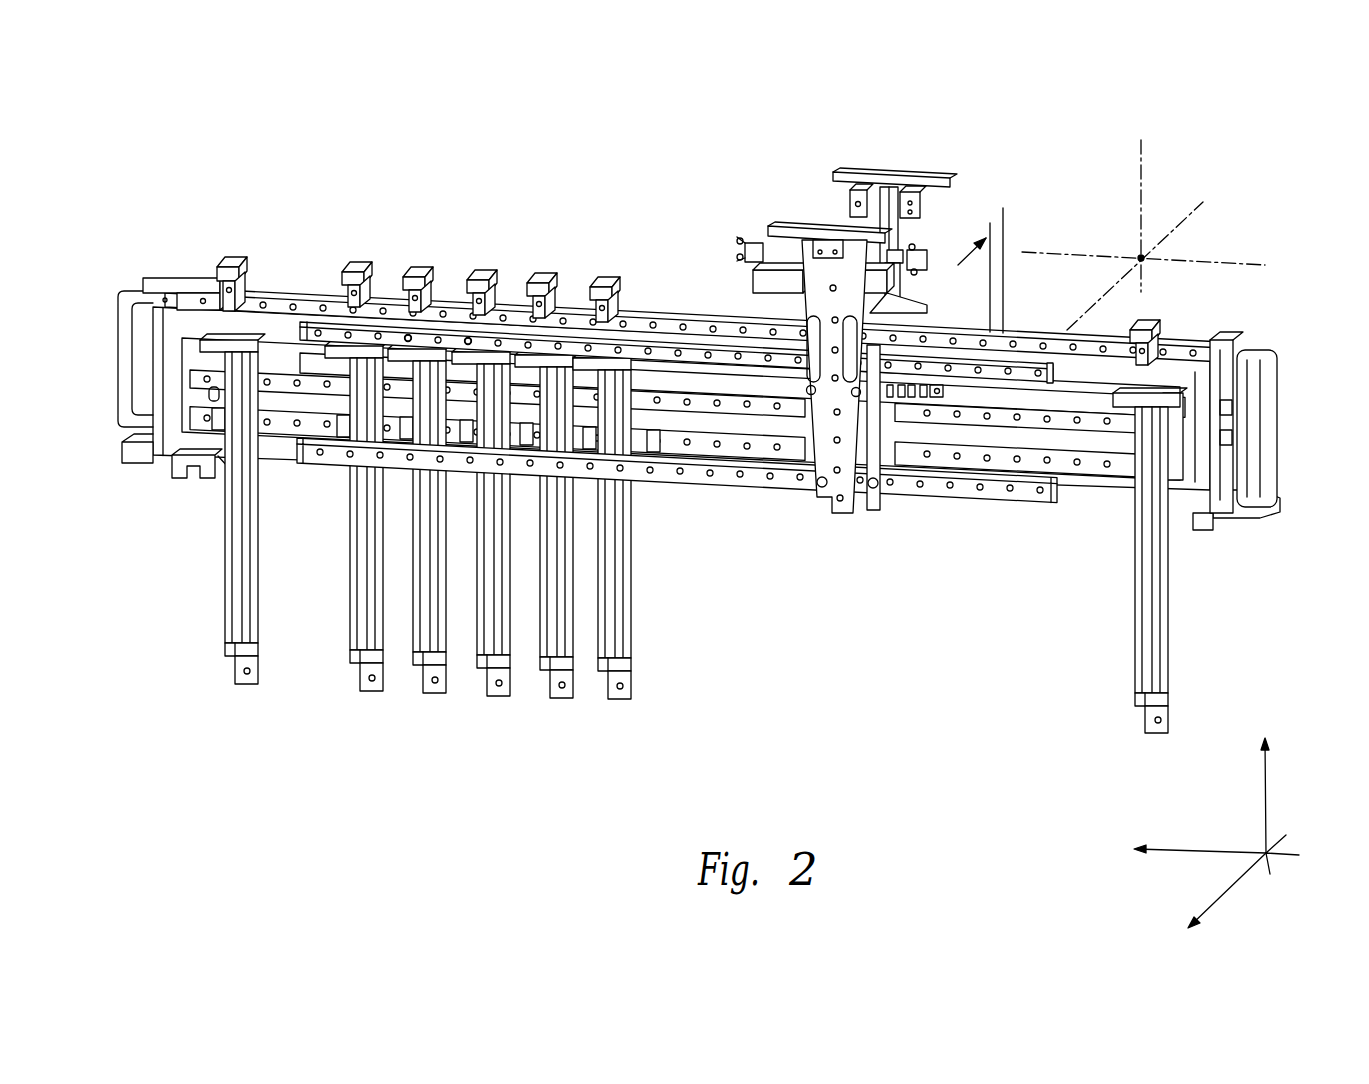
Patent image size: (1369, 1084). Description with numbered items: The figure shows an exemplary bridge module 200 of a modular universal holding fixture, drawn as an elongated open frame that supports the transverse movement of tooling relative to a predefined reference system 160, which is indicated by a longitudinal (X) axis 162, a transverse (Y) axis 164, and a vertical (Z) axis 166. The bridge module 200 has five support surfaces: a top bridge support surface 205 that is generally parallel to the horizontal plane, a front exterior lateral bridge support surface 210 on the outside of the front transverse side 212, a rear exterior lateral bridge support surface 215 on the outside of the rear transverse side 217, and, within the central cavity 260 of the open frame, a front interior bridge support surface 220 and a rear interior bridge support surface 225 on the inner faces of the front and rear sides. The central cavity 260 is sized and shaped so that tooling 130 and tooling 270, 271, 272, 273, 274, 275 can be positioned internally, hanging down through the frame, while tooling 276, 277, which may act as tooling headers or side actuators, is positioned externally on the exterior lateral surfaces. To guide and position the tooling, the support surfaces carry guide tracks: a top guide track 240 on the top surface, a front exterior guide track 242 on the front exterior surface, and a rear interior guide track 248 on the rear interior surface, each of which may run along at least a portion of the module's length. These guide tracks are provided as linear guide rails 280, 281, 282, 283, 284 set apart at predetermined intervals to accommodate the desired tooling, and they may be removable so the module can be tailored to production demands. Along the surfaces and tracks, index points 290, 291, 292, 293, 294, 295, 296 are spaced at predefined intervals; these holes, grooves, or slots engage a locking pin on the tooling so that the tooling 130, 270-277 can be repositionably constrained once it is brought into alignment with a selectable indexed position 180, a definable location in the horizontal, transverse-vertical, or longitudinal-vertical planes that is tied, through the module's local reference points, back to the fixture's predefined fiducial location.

The bridge module 200 is at (691, 432).
The tooling 130 is at (1137, 638).
The reference system 160 is at (1244, 793).
The longitudinal (X) axis 162 is at (1223, 896).
The transverse (Y) axis 164 is at (1205, 849).
The vertical (Z) axis 166 is at (1266, 795).
The selectable indexed position 180 is at (1141, 257).
The top bridge support surface 205 is at (713, 300).
The front exterior lateral bridge support surface 210 is at (1103, 492).
The front transverse side 212 is at (167, 350).
The rear exterior lateral bridge support surface 215 is at (1210, 335).
The rear transverse side 217 is at (188, 290).
The front interior bridge support surface 220 is at (163, 305).
The rear interior bridge support surface 225 is at (655, 312).
The top guide track 240 is at (290, 300).
The front exterior guide track 242 is at (1053, 371).
The rear interior guide track 248 is at (280, 305).
The central cavity 260 is at (1008, 217).
The tooling 270 is at (623, 698).
The tooling 271 is at (562, 697).
The tooling 272 is at (493, 695).
The tooling 273 is at (435, 695).
The tooling 274 is at (372, 692).
The tooling 275 is at (237, 683).
The tooling 276 is at (795, 227).
The tooling 277 is at (858, 172).
The guide rail 280 is at (965, 487).
The guide rail 281 is at (965, 363).
The guide rail 282 is at (1037, 348).
The guide rail 283 is at (1067, 423).
The guide rail 284 is at (703, 450).
The index point 290 is at (377, 336).
The index point 291 is at (407, 337).
The index point 292 is at (437, 338).
The index point 293 is at (467, 340).
The index point 294 is at (497, 341).
The index point 295 is at (527, 343).
The index point 296 is at (557, 345).